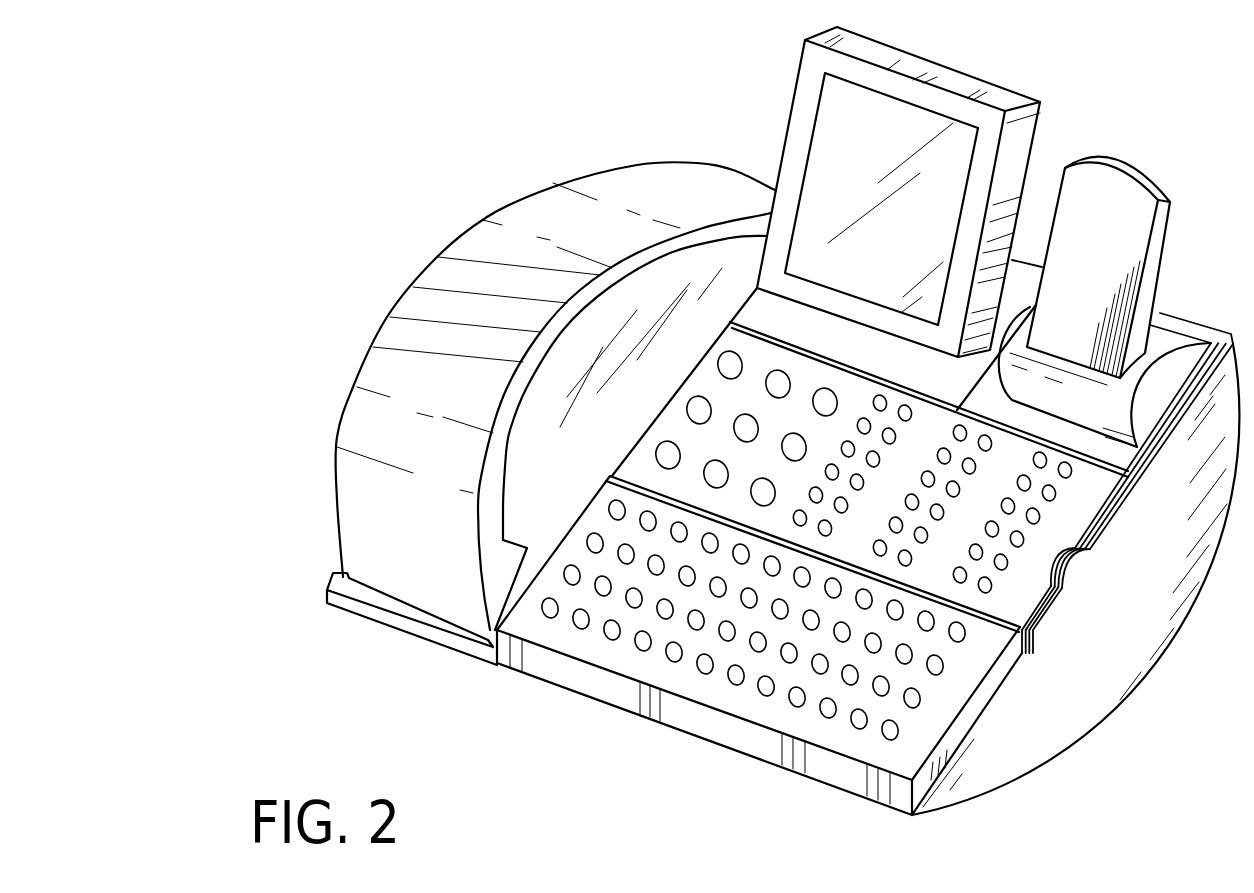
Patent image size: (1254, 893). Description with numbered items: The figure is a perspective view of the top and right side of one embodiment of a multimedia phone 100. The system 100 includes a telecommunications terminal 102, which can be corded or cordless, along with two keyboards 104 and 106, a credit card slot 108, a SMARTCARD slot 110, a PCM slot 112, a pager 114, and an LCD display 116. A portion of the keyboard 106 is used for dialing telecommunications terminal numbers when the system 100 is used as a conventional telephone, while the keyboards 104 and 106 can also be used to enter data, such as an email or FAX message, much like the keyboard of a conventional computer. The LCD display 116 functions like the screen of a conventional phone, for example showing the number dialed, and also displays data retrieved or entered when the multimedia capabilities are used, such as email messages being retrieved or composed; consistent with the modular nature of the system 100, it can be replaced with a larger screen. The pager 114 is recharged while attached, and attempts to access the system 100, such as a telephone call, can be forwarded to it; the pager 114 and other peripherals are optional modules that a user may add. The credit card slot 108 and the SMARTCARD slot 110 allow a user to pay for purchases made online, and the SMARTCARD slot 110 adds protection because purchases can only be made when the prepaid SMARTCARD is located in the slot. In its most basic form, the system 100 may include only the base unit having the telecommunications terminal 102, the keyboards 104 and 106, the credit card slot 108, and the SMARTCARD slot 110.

The multimedia phone 100 is at (646, 45).
The telecommunications terminal 102 is at (517, 197).
The keyboard 104 is at (767, 687).
The keyboard 106 is at (663, 447).
The credit card slot 108 is at (1025, 655).
The SMARTCARD slot 110 is at (1092, 551).
The PCM slot 112 is at (1130, 497).
The pager 114 is at (1157, 241).
The LCD display 116 is at (822, 163).